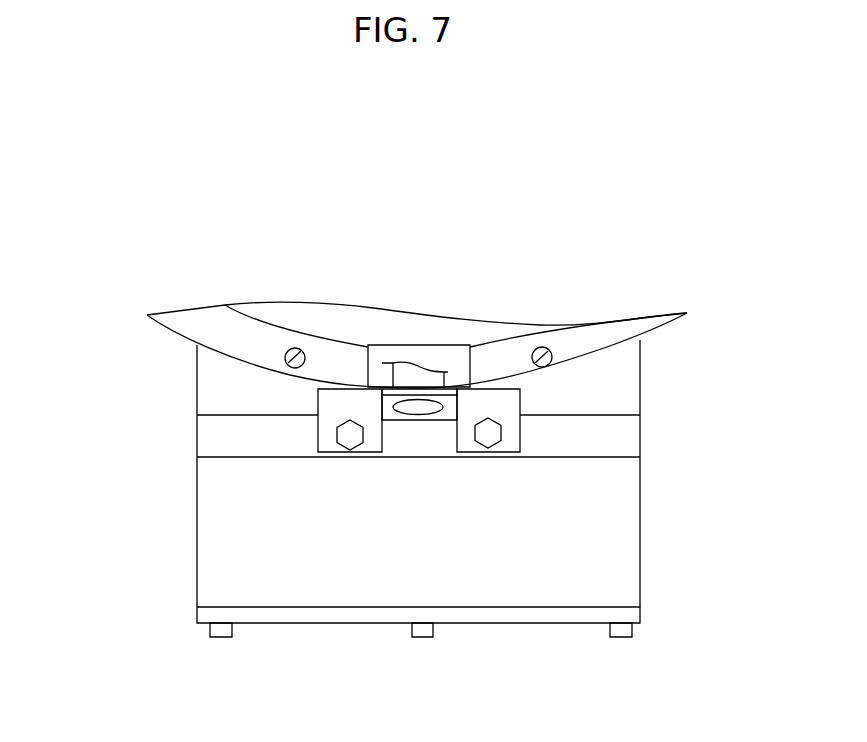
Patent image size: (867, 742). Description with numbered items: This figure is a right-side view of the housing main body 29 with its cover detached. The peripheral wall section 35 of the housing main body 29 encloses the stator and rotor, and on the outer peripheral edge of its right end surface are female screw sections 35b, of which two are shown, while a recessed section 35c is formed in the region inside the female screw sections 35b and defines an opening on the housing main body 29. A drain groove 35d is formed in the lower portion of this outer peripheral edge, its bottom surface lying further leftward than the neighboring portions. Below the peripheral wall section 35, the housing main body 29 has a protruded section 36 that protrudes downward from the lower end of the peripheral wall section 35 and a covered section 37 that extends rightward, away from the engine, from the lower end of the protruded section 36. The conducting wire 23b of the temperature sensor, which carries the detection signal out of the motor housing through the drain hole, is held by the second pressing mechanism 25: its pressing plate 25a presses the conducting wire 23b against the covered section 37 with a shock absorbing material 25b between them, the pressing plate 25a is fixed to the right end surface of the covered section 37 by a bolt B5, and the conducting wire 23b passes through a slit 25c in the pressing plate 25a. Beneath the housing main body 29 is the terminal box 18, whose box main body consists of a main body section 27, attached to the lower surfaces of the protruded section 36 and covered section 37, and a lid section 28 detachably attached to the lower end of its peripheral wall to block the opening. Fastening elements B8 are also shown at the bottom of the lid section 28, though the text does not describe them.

The terminal box 18 is at (331, 486).
The main body section 27 is at (212, 552).
The lid section 28 is at (210, 618).
The bolt (foot) B8 is at (221, 639).
The housing main body 29 is at (461, 351).
The peripheral wall section 35 is at (435, 323).
The female screw sections 35b is at (295, 348).
The recessed section 35c is at (353, 316).
The drain groove 35d is at (460, 363).
The protruded section 36 is at (625, 392).
The covered section 37 is at (674, 433).
The second pressing mechanism 25 is at (403, 484).
The pressing plate 25a is at (370, 447).
The shock absorbing material 25b is at (388, 412).
The slit 25c is at (477, 466).
The conducting wire 23b is at (417, 407).
The bolt B5 is at (350, 436).